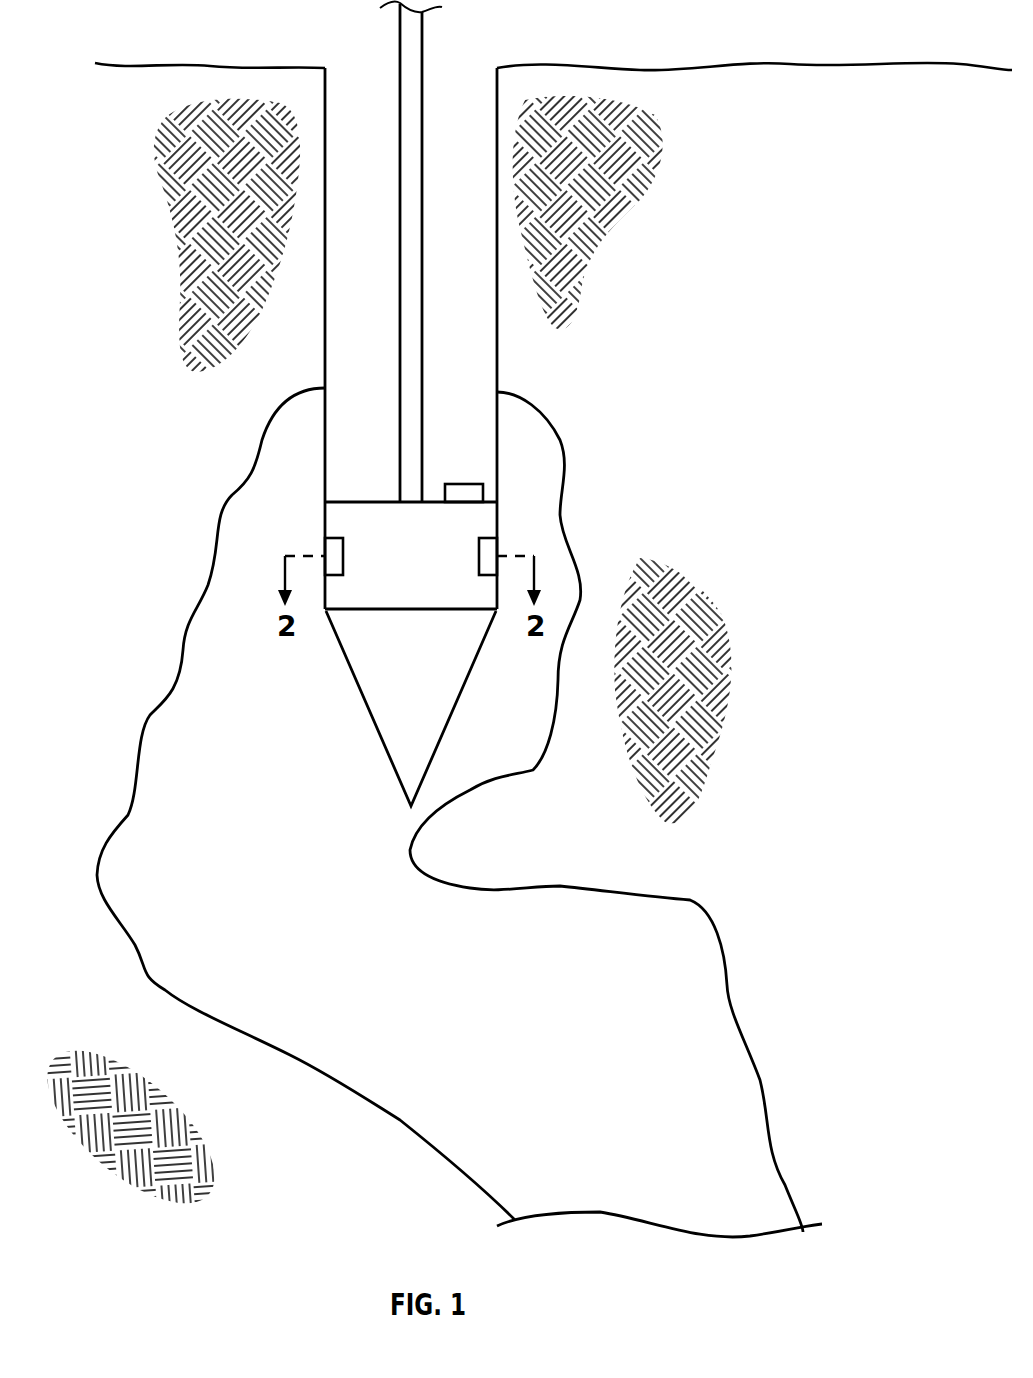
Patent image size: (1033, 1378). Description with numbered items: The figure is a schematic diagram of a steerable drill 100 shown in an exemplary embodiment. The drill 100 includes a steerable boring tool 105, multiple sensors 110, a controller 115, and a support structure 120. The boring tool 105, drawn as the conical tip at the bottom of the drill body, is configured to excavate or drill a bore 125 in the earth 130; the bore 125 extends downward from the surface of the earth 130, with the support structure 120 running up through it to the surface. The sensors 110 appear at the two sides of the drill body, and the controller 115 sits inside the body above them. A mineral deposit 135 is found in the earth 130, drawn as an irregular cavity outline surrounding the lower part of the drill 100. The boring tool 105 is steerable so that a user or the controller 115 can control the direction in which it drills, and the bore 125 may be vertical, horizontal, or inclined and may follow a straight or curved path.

The steerable drill 100 is at (364, 783).
The steerable boring tool 105 is at (352, 678).
The sensors 110 is at (479, 555).
The controller 115 is at (453, 482).
The support structure 120 is at (398, 137).
The bore 125 is at (488, 90).
The earth 130 is at (597, 75).
The mineral deposit 135 is at (130, 838).